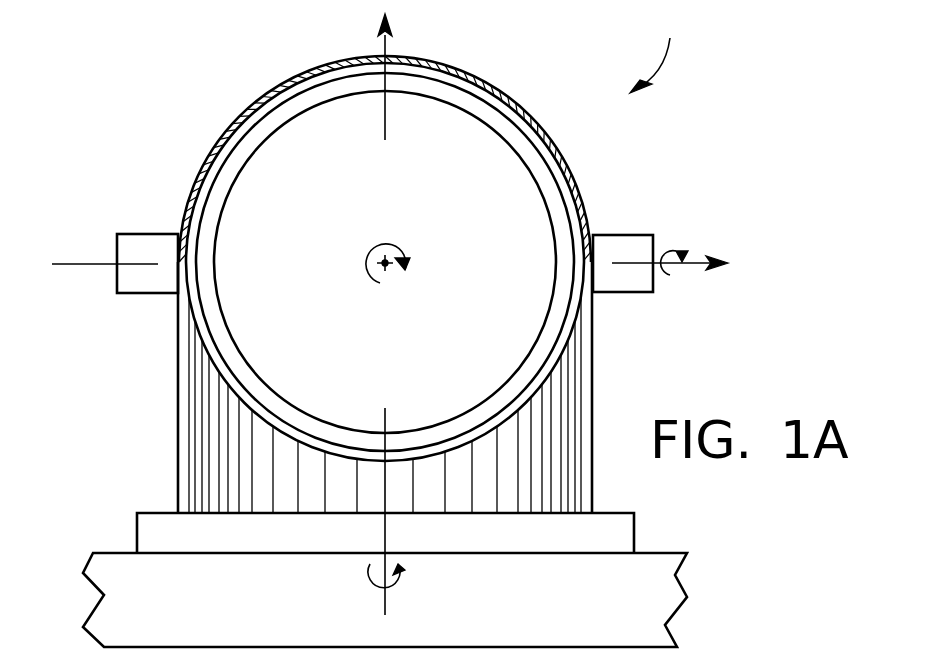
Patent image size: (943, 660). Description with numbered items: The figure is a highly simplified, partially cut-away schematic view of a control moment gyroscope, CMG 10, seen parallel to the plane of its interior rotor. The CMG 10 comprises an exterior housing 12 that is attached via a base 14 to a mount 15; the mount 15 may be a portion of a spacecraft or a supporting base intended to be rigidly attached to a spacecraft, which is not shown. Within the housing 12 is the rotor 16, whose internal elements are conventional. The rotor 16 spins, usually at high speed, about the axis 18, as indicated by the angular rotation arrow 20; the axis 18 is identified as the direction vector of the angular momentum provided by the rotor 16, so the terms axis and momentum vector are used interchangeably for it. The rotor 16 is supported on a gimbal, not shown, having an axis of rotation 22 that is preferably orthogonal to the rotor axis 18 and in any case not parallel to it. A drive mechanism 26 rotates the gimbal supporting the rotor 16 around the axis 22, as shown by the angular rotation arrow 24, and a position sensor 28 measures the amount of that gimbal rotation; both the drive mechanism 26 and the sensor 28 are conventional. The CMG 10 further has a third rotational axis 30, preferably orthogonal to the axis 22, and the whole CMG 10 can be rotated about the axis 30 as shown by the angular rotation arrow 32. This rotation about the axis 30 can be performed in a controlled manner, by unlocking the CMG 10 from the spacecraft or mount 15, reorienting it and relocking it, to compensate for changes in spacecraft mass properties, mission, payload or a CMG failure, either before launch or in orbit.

The CMG 10 is at (662, 47).
The exterior housing 12 is at (176, 422).
The base 14 is at (145, 511).
The mount 15 is at (185, 625).
The interior rotor 16 is at (402, 195).
The axis 18 is at (392, 274).
The angular rotation arrow 20 is at (370, 246).
The axis of rotation 22 is at (64, 263).
The angular rotation arrow 24 is at (665, 240).
The drive mechanism 26 is at (628, 234).
The position sensor 28 is at (146, 233).
The third rotational axis 30 is at (383, 47).
The angular rotation arrow 32 is at (392, 586).